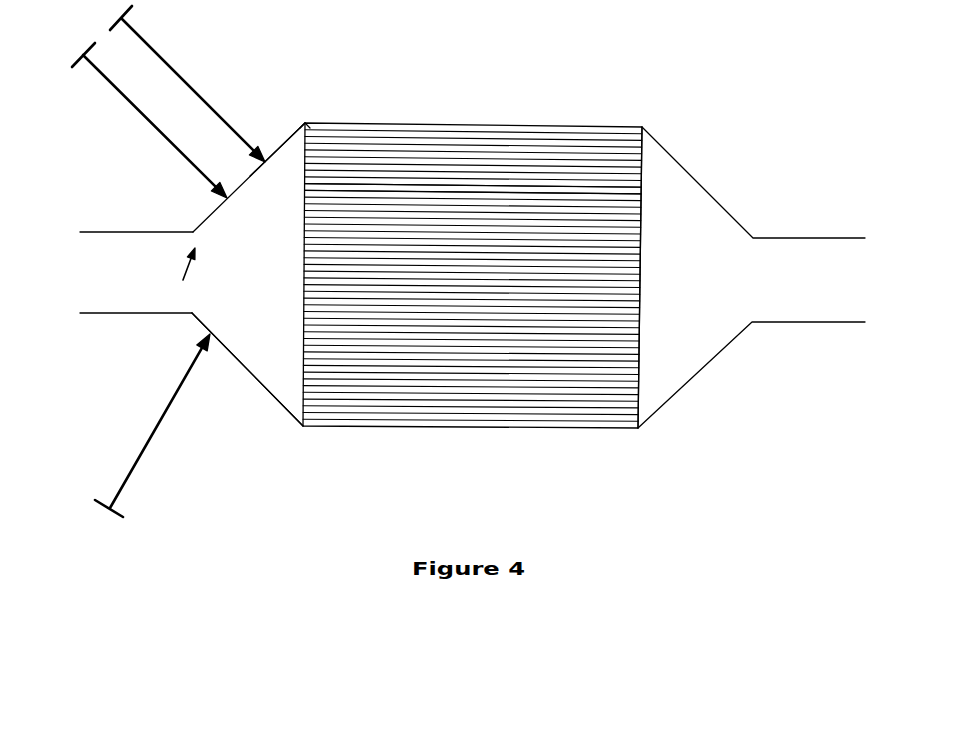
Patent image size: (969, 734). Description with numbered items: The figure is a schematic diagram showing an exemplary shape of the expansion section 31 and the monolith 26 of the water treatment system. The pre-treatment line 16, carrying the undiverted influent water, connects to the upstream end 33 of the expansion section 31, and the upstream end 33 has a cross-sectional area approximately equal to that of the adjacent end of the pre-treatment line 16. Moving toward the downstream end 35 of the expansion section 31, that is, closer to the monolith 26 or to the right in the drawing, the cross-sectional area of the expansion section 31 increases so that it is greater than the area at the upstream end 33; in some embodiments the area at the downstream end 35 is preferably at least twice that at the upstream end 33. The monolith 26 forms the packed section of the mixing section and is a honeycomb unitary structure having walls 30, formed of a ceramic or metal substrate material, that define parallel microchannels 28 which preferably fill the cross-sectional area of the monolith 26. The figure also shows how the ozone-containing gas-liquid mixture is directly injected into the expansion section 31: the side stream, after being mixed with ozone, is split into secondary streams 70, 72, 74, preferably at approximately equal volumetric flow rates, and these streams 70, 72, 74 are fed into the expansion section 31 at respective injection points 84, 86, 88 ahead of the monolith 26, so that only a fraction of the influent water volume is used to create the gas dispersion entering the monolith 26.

The pre-treatment line 16 is at (125, 315).
The monolith 26 is at (440, 125).
The parallel microchannels 28 is at (580, 132).
The walls 30 is at (508, 140).
The expansion section 31 is at (302, 434).
The upstream end 33 is at (184, 275).
The downstream end 35 is at (302, 110).
The secondary stream 70 is at (148, 440).
The secondary stream 72 is at (155, 50).
The secondary stream 74 is at (113, 87).
The injection point 84 is at (227, 202).
The injection point 86 is at (265, 163).
The injection point 88 is at (211, 332).